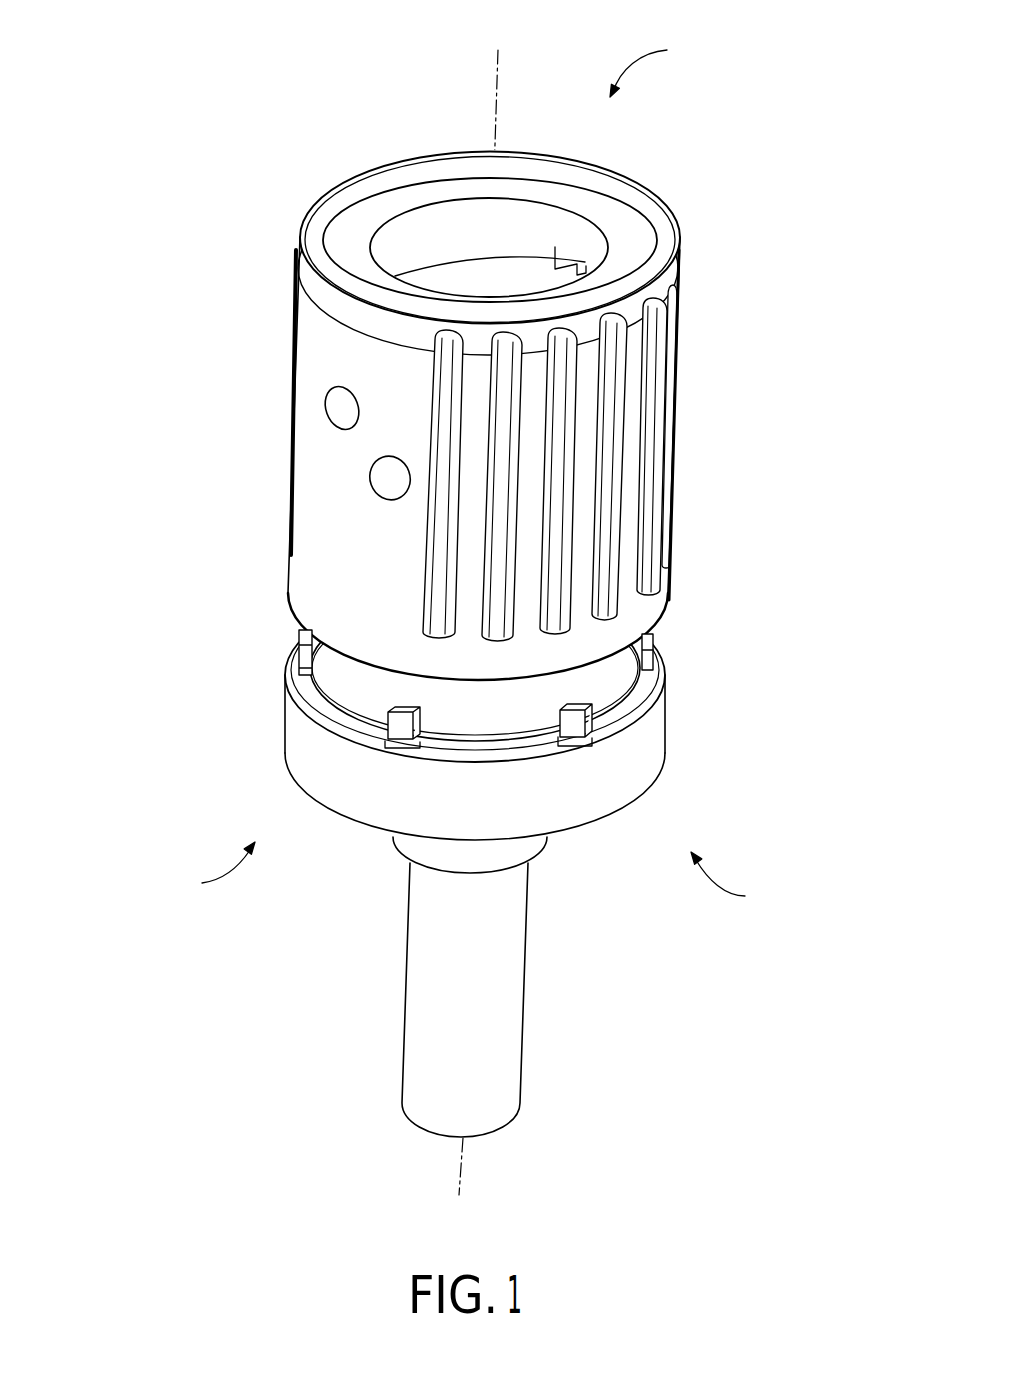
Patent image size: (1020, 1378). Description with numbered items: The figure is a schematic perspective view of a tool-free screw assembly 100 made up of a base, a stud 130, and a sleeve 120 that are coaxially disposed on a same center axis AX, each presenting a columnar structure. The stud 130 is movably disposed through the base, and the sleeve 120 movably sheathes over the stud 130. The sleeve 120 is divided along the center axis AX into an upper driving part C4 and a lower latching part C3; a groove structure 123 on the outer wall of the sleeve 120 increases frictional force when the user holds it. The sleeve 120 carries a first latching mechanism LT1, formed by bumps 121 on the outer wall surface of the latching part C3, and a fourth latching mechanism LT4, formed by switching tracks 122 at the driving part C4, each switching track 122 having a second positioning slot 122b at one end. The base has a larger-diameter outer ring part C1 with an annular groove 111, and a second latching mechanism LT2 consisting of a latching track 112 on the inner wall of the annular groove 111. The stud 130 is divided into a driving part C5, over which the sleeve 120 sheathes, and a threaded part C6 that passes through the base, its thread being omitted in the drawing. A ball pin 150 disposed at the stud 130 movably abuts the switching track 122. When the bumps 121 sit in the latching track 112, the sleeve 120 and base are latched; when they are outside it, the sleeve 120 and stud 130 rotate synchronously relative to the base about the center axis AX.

The tool-free screw assembly 100 is at (284, 1158).
The sleeve 120 is at (142, 8).
The stud 130 is at (142, 118).
The center axis AX is at (487, 603).
The outer ring part C1 is at (298, 723).
The latching part C3 is at (617, 686).
The driving part C4 is at (465, 391).
The driving part C5 is at (458, 273).
The threaded part C6 is at (420, 982).
The annular groove 111 is at (486, 735).
The latching track 112 is at (397, 733).
The bump 121 is at (580, 722).
The switching track 122 is at (563, 257).
The second positioning slot 122b is at (342, 411).
The groove structure 123 is at (653, 476).
The ball pin 150 is at (390, 478).
The first latching mechanism LT1 is at (743, 881).
The second latching mechanism LT2 is at (203, 870).
The fourth latching mechanism LT4 is at (663, 67).